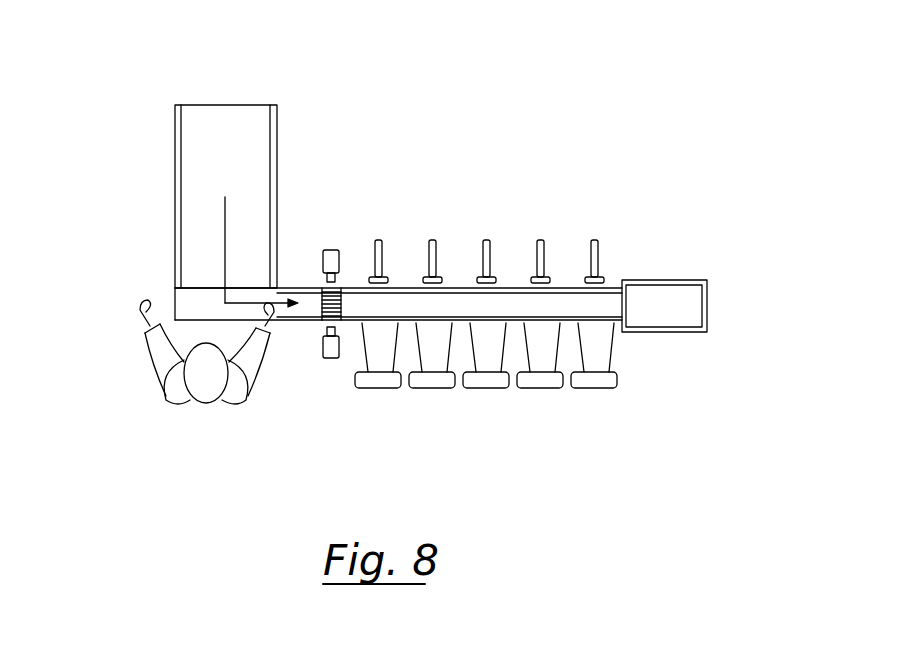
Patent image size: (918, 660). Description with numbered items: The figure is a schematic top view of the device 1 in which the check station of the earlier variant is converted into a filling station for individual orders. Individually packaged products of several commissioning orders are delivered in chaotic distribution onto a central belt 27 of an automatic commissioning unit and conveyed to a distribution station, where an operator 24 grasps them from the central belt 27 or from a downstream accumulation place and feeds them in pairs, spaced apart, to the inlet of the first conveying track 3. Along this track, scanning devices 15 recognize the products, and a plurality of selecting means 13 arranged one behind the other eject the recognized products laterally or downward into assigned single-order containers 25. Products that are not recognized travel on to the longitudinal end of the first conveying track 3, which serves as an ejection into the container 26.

The device 1 is at (628, 122).
The first conveying track 3 is at (600, 305).
The selecting means 13 is at (593, 230).
The scanning devices 15 is at (330, 357).
The operator 24 is at (172, 385).
The single-order containers 25 is at (590, 390).
The container 26 is at (695, 320).
The central belt 27 is at (198, 128).